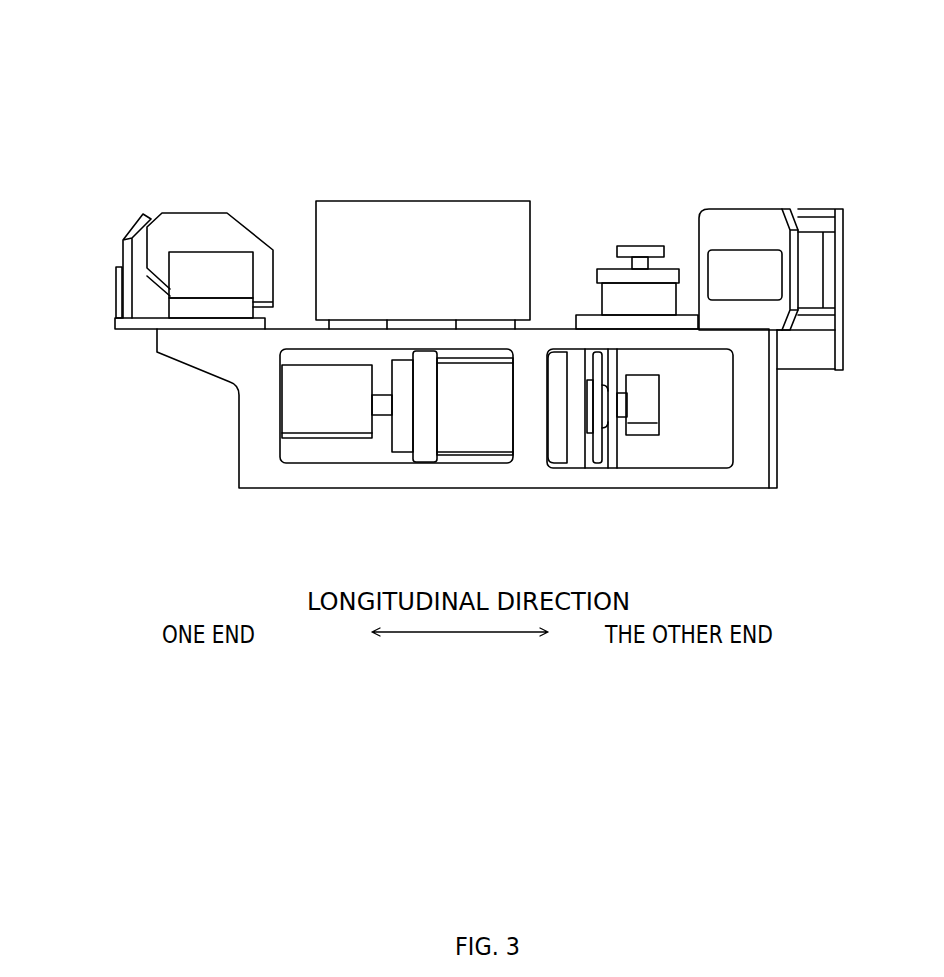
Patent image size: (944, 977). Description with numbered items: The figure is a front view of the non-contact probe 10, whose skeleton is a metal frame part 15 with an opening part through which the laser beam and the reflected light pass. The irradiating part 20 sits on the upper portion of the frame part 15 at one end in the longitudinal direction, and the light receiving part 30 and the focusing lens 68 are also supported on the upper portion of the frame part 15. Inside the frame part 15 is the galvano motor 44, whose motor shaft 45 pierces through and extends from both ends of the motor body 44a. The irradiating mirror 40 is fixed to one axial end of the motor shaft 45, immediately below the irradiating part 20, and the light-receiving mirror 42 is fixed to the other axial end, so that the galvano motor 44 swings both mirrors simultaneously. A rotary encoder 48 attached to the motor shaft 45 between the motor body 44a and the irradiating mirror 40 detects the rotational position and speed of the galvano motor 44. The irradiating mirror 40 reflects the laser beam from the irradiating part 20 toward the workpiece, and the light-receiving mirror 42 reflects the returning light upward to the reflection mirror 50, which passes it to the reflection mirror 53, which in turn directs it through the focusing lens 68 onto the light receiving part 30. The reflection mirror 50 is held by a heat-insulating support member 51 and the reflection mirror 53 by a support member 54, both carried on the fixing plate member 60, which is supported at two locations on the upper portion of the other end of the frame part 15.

The non-contact probe 10 is at (460, 112).
The frame part 15 is at (525, 473).
The irradiating part 20 is at (671, 275).
The light receiving part 30 is at (828, 242).
The irradiating mirror 40 is at (647, 427).
The light-receiving mirror 42 is at (329, 420).
The galvano motor 44 is at (485, 430).
The motor body 44a is at (445, 457).
The motor shaft 45 is at (383, 410).
The rotary encoder 48 is at (598, 452).
The reflection mirror 50 is at (217, 232).
The support member 51 is at (235, 270).
The reflection mirror 53 is at (139, 232).
The support member 54 is at (115, 293).
The fixing plate member 60 is at (135, 323).
The focusing lens 68 is at (388, 213).